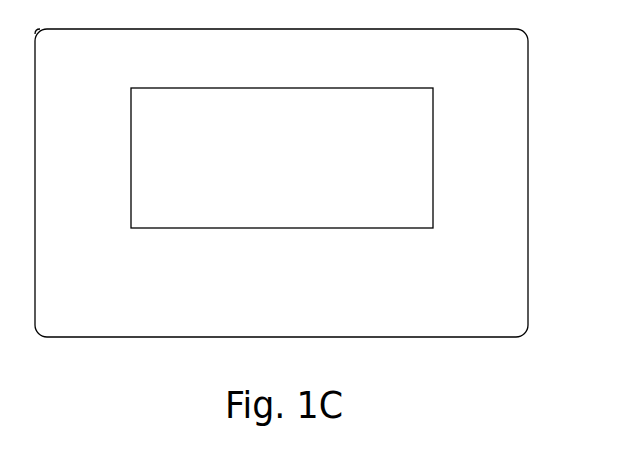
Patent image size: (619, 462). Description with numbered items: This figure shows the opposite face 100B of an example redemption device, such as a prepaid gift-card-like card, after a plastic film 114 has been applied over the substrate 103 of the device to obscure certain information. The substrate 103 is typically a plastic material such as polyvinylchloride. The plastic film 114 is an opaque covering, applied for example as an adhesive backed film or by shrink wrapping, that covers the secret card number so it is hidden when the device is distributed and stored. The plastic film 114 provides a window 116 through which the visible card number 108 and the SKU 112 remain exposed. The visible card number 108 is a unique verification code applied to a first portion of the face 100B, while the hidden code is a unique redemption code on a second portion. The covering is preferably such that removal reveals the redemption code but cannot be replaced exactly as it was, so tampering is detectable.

The opposite face 100B is at (128, 70).
The substrate 103 is at (472, 338).
The visible card number 108 is at (417, 97).
The SKU 112 is at (306, 185).
The plastic film 114 is at (430, 332).
The window 116 is at (167, 229).